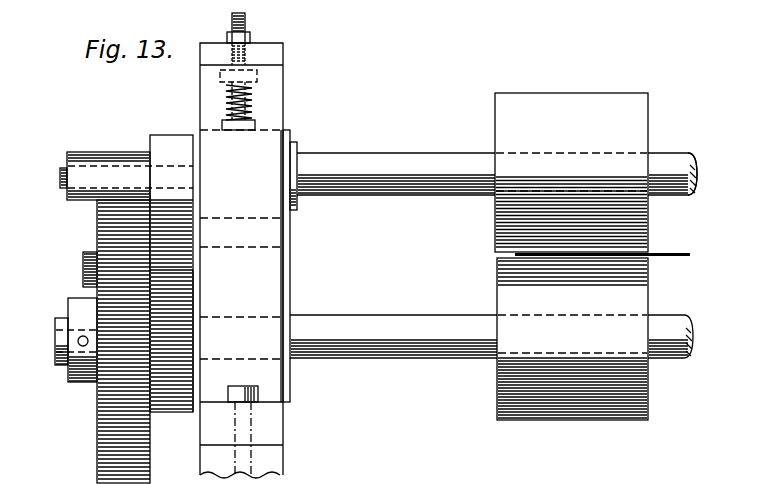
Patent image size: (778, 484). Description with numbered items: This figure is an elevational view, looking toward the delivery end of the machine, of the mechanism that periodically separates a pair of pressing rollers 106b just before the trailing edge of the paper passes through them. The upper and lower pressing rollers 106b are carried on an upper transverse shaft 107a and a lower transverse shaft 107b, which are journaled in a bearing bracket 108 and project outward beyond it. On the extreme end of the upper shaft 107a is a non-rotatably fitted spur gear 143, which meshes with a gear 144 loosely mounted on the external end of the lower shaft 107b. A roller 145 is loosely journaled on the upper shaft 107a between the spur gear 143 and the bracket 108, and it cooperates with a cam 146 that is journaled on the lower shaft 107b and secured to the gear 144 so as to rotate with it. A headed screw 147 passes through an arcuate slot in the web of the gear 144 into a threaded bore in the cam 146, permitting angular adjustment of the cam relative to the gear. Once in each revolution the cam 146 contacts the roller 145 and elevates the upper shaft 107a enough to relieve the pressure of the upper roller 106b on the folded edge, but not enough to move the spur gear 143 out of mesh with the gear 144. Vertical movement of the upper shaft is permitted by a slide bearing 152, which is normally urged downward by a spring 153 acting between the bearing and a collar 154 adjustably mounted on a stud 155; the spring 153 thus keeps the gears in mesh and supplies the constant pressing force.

The spur gear 143 is at (67, 153).
The gear 144 is at (100, 433).
The roller 145 is at (165, 135).
The cam 146 is at (183, 296).
The headed screw 147 is at (85, 262).
The bearing bracket 108 is at (268, 96).
The slide bearing 152 is at (297, 147).
The spring 153 is at (252, 112).
The collar 154 is at (258, 73).
The stud 155 is at (246, 23).
The upper transverse shaft 107a is at (455, 160).
The lower transverse shaft 107b is at (440, 330).
The pressing rollers 106b is at (648, 117).